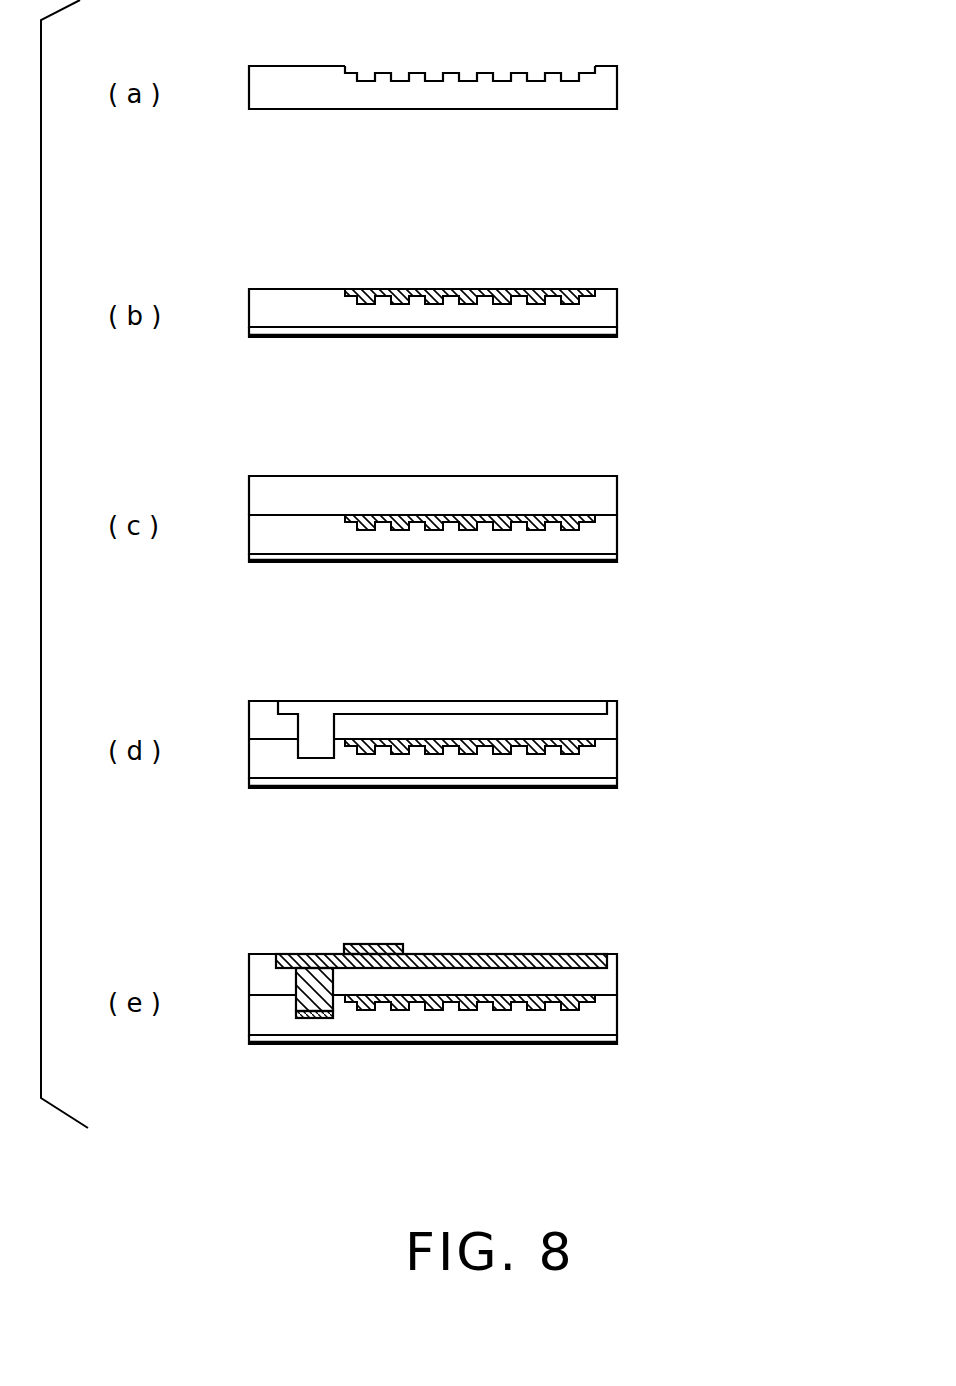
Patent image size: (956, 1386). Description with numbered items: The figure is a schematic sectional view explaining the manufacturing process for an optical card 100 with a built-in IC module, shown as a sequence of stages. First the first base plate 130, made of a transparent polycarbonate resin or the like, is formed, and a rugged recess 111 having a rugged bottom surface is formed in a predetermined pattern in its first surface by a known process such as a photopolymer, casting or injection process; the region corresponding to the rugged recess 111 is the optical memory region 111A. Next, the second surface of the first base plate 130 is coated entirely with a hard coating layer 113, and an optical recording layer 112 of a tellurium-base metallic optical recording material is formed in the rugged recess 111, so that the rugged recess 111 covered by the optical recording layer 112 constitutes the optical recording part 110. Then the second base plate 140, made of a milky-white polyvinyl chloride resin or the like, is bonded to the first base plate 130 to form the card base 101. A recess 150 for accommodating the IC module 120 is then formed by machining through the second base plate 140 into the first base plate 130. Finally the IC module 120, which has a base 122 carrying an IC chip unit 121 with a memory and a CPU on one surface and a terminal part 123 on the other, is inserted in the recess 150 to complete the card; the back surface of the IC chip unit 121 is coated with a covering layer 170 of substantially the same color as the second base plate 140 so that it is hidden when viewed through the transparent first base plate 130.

The optical card with a built-in IC module 100 is at (718, 245).
The card base 101 is at (740, 467).
The optical recording part 110 is at (466, 531).
The rugged recess 111 is at (518, 70).
The optical memory region 111A is at (600, 113).
The optical recording layer 112 is at (570, 288).
The hard coating layer 113 is at (553, 338).
The IC module 120 is at (327, 948).
The IC chip unit 121 is at (303, 1007).
The base 122 is at (287, 952).
The terminal part 123 is at (387, 943).
The first base plate 130 is at (618, 87).
The second base plate 140 is at (605, 494).
The recess 150 is at (318, 712).
The covering layer 170 is at (300, 1020).